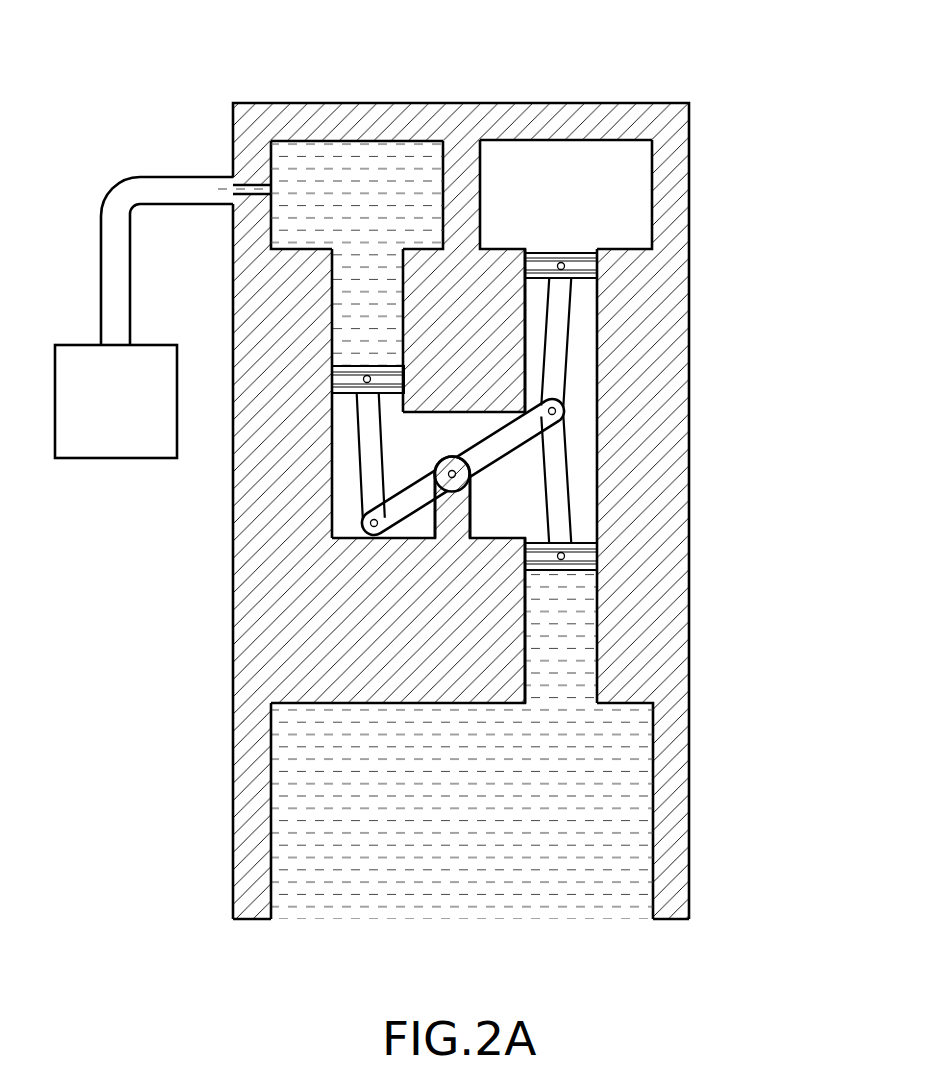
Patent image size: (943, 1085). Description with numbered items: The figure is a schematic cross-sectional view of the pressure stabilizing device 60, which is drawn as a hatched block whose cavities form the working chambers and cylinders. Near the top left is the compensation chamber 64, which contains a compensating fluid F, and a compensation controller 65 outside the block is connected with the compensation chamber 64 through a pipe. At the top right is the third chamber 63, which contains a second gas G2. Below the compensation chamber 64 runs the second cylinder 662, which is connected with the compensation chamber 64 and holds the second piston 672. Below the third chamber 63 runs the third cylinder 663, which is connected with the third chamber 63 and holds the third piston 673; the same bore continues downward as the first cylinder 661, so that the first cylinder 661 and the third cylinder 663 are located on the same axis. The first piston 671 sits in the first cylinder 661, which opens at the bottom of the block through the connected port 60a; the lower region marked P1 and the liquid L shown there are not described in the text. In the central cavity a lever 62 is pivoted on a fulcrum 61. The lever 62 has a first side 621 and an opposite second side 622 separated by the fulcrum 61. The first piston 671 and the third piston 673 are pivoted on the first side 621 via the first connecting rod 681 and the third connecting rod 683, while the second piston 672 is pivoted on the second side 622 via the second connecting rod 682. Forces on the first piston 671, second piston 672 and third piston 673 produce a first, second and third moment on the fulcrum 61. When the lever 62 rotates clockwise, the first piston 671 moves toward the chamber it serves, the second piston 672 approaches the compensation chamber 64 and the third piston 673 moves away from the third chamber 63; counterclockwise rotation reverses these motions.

The pressure stabilizing device 60 is at (812, 33).
The connected port 60a is at (592, 920).
The fulcrum 61 is at (448, 457).
The lever 62 is at (463, 467).
The first side 621 is at (510, 440).
The second side 622 is at (412, 497).
The third chamber 63 is at (655, 183).
The compensation chamber 64 is at (271, 226).
The compensation controller 65 is at (100, 433).
The first cylinder 661 is at (598, 632).
The second cylinder 662 is at (333, 320).
The third cylinder 663 is at (598, 350).
The first piston 671 is at (583, 553).
The second piston 672 is at (343, 380).
The third piston 673 is at (583, 268).
The first connecting rod 681 is at (565, 467).
The second connecting rod 682 is at (372, 454).
The third connecting rod 683 is at (562, 325).
The compensating fluid F is at (285, 153).
The second gas G2 is at (578, 157).
The pressure chamber P1 is at (519, 829).
The liquid L is at (389, 877).